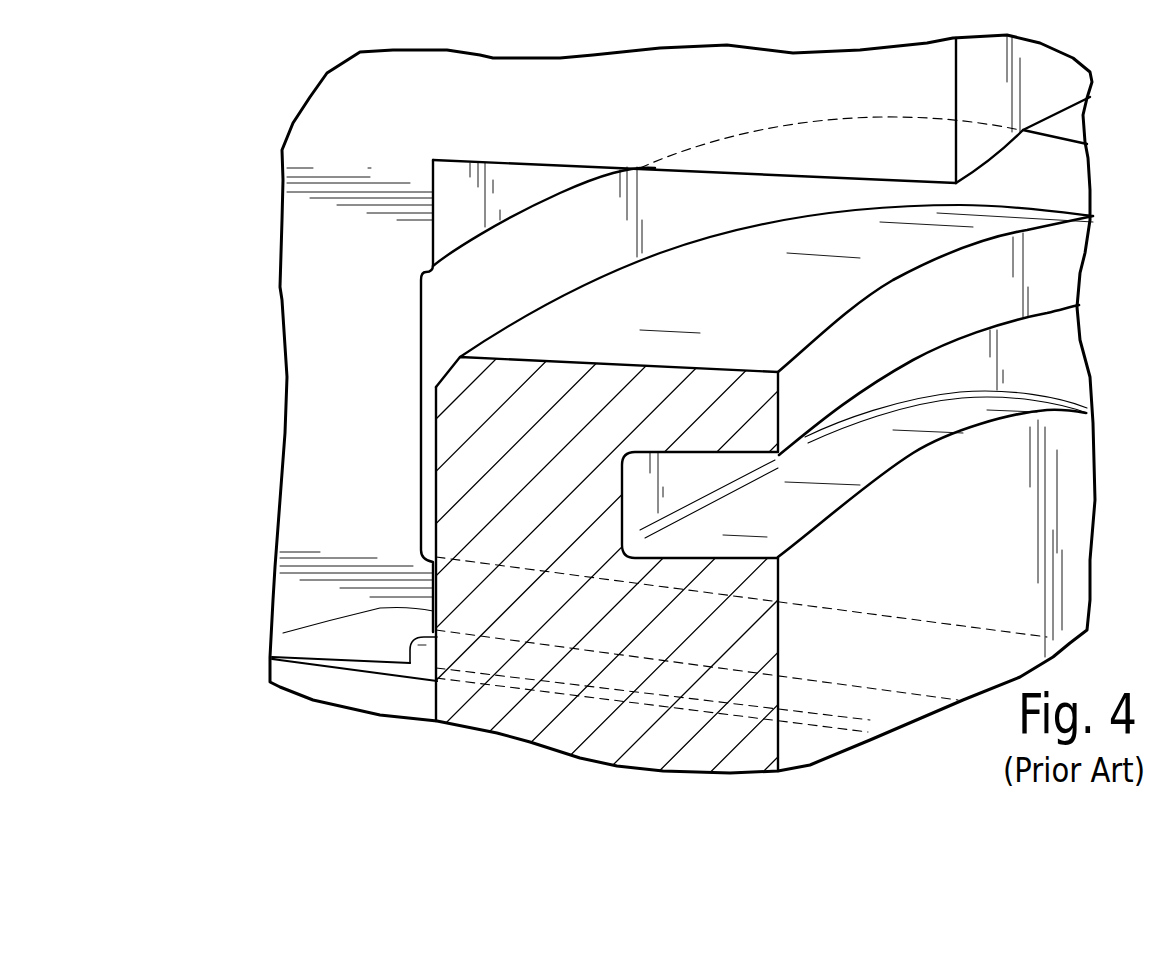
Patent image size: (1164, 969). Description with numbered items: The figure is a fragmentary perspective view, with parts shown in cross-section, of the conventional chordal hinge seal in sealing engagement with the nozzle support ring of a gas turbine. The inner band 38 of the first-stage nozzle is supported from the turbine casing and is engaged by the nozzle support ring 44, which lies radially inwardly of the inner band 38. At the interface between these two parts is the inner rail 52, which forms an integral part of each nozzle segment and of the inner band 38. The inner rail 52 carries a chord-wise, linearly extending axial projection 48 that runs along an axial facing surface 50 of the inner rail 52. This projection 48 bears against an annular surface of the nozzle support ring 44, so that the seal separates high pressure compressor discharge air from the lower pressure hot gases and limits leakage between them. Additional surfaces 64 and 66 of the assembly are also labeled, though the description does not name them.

The inner band 38 is at (357, 87).
The nozzle support ring 44 is at (523, 724).
The axial projection 48 is at (272, 631).
The axial facing surface 50 is at (437, 296).
The inner rail 52 is at (333, 397).
The curved slot surface 64 is at (693, 322).
The upper slot surface 66 is at (1000, 147).